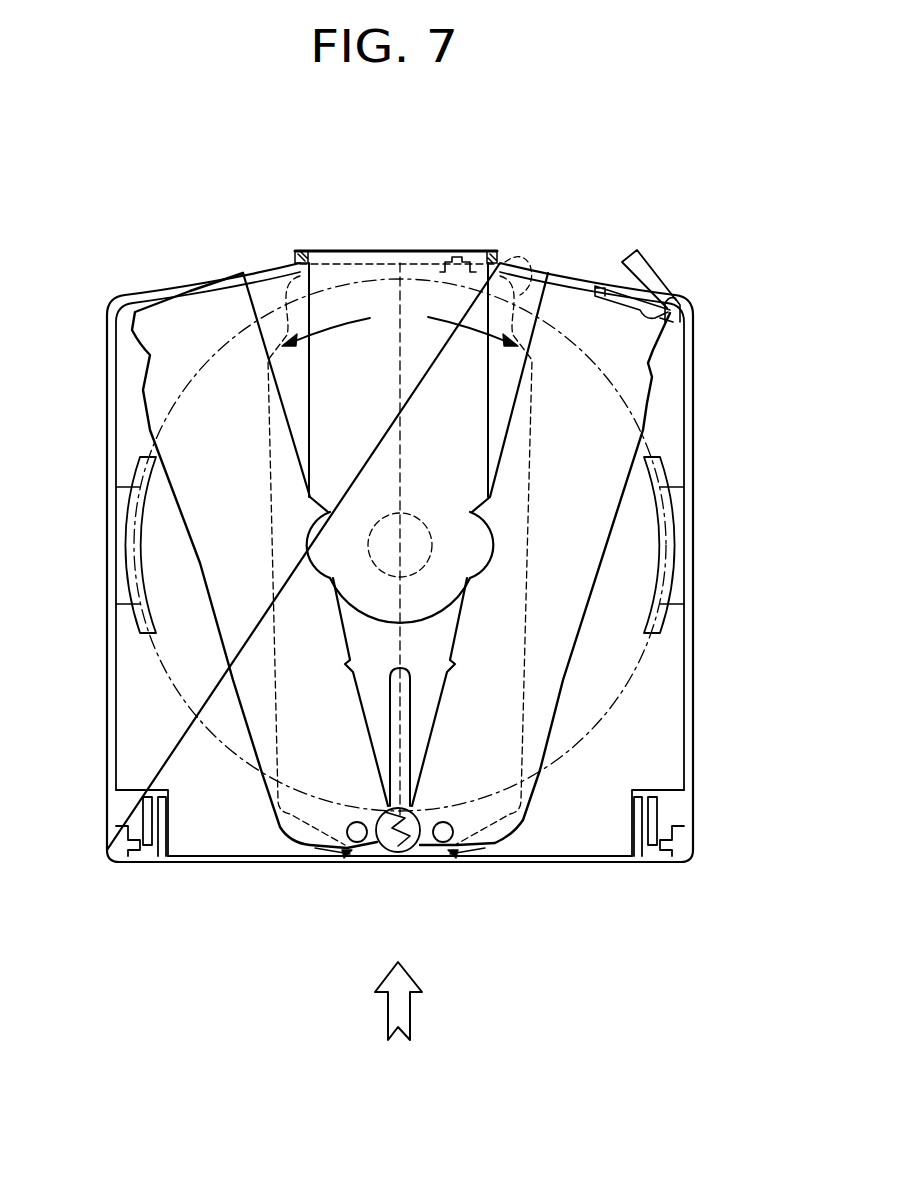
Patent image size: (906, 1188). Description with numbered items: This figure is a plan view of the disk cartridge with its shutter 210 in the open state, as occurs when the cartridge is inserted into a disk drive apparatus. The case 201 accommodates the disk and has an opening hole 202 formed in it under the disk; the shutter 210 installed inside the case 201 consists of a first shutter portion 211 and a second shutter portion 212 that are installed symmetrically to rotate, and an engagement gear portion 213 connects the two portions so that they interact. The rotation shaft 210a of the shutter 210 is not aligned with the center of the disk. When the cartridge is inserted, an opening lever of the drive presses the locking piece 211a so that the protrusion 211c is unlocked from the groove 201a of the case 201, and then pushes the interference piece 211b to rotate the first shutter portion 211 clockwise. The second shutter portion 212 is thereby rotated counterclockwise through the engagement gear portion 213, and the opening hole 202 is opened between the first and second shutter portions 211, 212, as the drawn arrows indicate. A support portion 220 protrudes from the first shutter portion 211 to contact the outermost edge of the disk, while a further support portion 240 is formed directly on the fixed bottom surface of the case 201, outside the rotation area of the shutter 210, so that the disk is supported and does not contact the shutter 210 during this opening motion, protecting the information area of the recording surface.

The case 201 is at (107, 402).
The groove 201a is at (460, 257).
The opening hole 202 is at (372, 296).
The shutter 210 is at (401, 623).
The first shutter portion 211 is at (443, 775).
The locking piece 211a is at (673, 318).
The interference piece 211b is at (677, 305).
The protrusion 211c is at (606, 286).
The second shutter portion 212 is at (278, 792).
The engagement gear portion 213 is at (398, 852).
The rotation shaft 210a is at (356, 842).
The support portion 220 is at (647, 270).
The support portion 240 is at (138, 627).